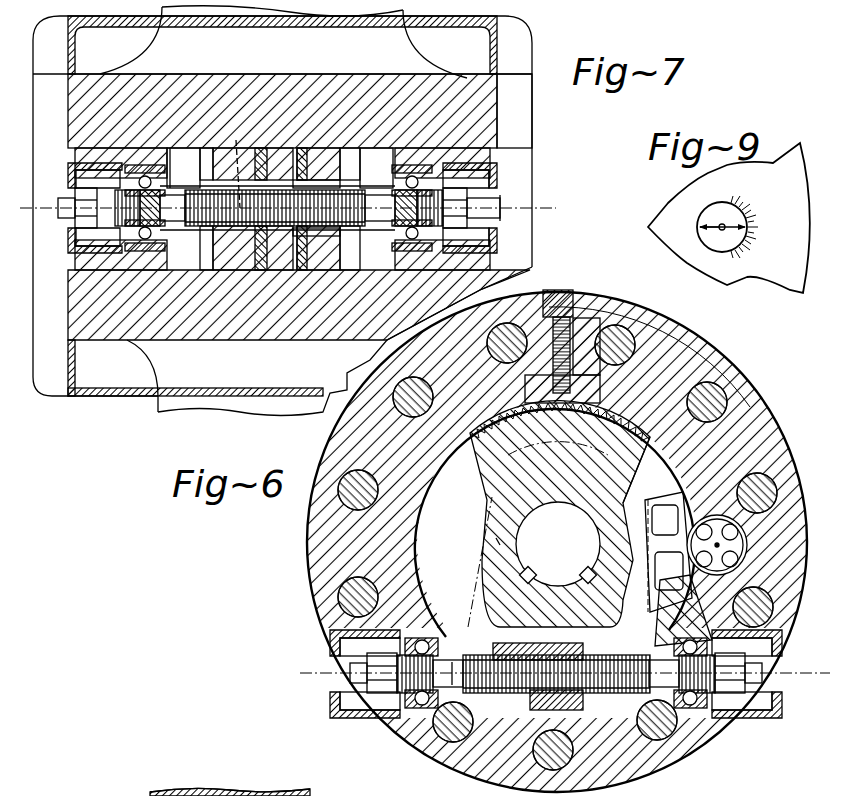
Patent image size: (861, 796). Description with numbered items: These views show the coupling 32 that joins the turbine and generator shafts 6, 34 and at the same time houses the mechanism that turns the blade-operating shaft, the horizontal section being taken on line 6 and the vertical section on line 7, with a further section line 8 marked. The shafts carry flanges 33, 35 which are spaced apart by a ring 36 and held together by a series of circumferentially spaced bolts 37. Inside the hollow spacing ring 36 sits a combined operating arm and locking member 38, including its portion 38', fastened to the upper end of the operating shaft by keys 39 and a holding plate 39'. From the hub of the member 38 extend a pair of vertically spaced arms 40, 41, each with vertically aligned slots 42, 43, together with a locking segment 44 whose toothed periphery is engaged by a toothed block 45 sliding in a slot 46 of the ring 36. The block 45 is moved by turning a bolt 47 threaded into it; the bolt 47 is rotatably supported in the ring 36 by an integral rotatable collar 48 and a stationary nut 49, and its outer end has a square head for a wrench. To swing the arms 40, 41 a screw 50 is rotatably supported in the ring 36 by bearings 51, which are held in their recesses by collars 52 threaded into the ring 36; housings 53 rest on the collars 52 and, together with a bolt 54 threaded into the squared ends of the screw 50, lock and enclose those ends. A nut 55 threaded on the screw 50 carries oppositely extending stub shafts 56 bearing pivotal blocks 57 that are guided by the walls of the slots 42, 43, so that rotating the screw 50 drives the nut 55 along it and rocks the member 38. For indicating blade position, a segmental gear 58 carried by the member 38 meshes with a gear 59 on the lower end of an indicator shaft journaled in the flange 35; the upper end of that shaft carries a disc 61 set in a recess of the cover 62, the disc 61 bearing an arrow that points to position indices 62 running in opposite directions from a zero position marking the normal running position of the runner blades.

In FIG. 7, the turbine shaft 6 is at (163, 367).
In FIG. 6, the section line 7— 7 is at (305, 653).
In FIG. 6, the section line 8— 8 is at (812, 546).
In FIG. 7, the coupling 32 is at (535, 175).
In FIG. 7, the flange 33 is at (76, 300).
In FIG. 7, the generator shaft 34 is at (403, 38).
In FIG. 6, the generator shaft 34 is at (190, 786).
In FIG. 7, the flange 35 is at (485, 128).
In FIG. 9, the flange 35 is at (806, 143).
In FIG. 7, the spacing ring 36 is at (468, 162).
In FIG. 6, the spacing ring 36 is at (745, 402).
In FIG. 6, the bolts 37 is at (705, 408).
In FIG. 6, the combined operating arm and locking member 38 is at (468, 562).
In FIG. 6, the combined operating arm and locking member (portion) 38' is at (462, 548).
In FIG. 6, the keys 39 is at (558, 544).
In FIG. 7, the holding plate 39' is at (220, 129).
In FIG. 7, the arm 40 is at (333, 167).
In FIG. 6, the arm 40 is at (612, 638).
In FIG. 7, the arm 41 is at (253, 233).
In FIG. 7, the slot 42 is at (326, 147).
In FIG. 6, the slot 42 is at (592, 710).
In FIG. 7, the slot 43 is at (306, 250).
In FIG. 6, the locking segment 44 is at (500, 465).
In FIG. 6, the toothed block 45 is at (660, 366).
In FIG. 6, the slot 46 is at (583, 327).
In FIG. 6, the bolt 47 is at (546, 345).
In FIG. 6, the rotatable collar 48 is at (582, 320).
In FIG. 6, the stationary nut 49 is at (536, 316).
In FIG. 7, the screw 50 is at (160, 182).
In FIG. 6, the screw 50 is at (452, 662).
In FIG. 7, the bearings 51 is at (150, 178).
In FIG. 6, the bearings 51 is at (427, 703).
In FIG. 7, the collars 52 is at (80, 262).
In FIG. 6, the collars 52 is at (394, 726).
In FIG. 7, the housings 53 is at (66, 167).
In FIG. 6, the housings 53 is at (331, 638).
In FIG. 7, the bolt 54 is at (503, 223).
In FIG. 6, the bolt 54 is at (350, 677).
In FIG. 7, the nut 55 is at (226, 233).
In FIG. 7, the stub shafts 56 is at (300, 147).
In FIG. 6, the pivotal blocks 57 is at (538, 646).
In FIG. 6, the segmental gear 58 is at (641, 470).
In FIG. 6, the gear 59 is at (662, 512).
In FIG. 6, the disc 61 is at (428, 795).
In FIG. 9, the disc 61 is at (710, 212).
In FIG. 9, the cover / position indices 62 is at (772, 211).